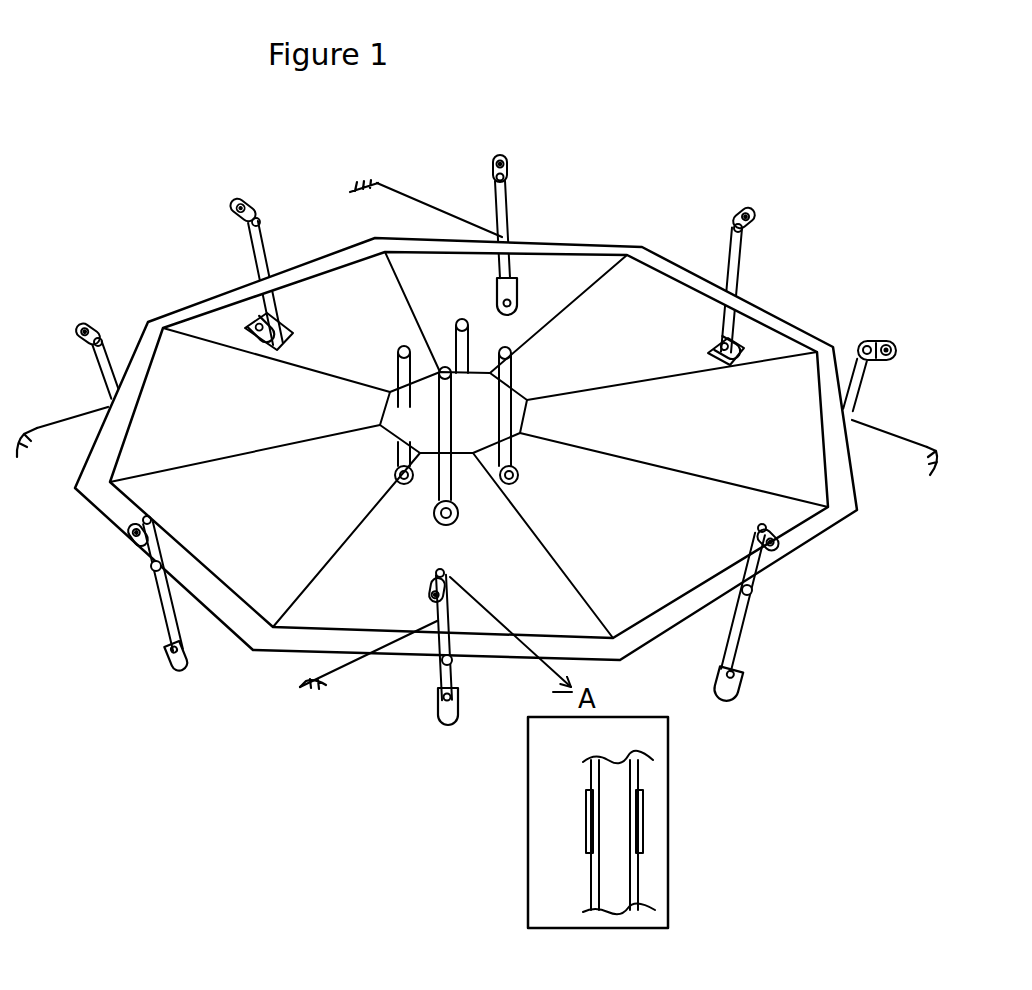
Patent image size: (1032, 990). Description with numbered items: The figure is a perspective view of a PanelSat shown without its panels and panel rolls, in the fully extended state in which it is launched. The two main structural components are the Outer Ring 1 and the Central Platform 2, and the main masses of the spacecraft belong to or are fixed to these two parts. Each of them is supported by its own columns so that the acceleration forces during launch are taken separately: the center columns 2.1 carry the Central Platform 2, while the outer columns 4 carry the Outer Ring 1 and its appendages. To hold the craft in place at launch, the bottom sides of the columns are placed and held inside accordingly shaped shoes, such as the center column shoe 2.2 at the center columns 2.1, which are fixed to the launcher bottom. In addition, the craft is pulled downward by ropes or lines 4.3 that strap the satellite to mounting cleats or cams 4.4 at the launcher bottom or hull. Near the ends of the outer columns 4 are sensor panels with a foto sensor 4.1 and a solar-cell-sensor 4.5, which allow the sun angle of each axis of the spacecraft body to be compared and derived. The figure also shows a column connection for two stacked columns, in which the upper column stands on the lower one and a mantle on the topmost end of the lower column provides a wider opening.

The Outer Ring 1 is at (573, 249).
The Central Platform 2 is at (474, 422).
The center column 2.1 is at (522, 466).
The center column shoe 2.2 is at (430, 510).
The outer column 4 is at (276, 226).
The foto sensor 4.1 is at (260, 322).
The ropes or lines 4.3 is at (359, 664).
The mounting cleat or cam 4.4 is at (303, 694).
The solar-cell-sensor 4.5 is at (246, 327).